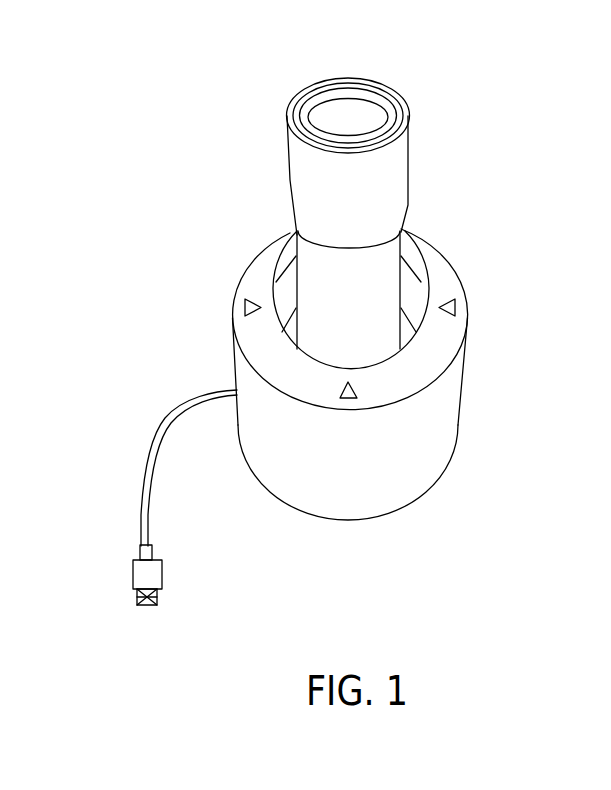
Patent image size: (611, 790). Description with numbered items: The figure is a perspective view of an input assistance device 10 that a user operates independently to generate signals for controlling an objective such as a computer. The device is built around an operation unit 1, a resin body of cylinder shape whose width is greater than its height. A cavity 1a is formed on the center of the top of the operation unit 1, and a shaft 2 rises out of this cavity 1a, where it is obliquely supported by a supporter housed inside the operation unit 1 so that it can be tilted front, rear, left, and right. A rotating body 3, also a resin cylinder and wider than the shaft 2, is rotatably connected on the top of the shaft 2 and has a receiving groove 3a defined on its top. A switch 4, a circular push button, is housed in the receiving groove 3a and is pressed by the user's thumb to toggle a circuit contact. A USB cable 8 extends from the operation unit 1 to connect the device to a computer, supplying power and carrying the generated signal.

The input assistance device 10 is at (98, 56).
The operation unit 1 is at (464, 407).
The cavity 1a is at (291, 295).
The shaft 2 is at (387, 292).
The rotating body 3 is at (407, 177).
The receiving groove 3a is at (320, 120).
The switch 4 is at (368, 117).
The USB cable 8 is at (162, 428).